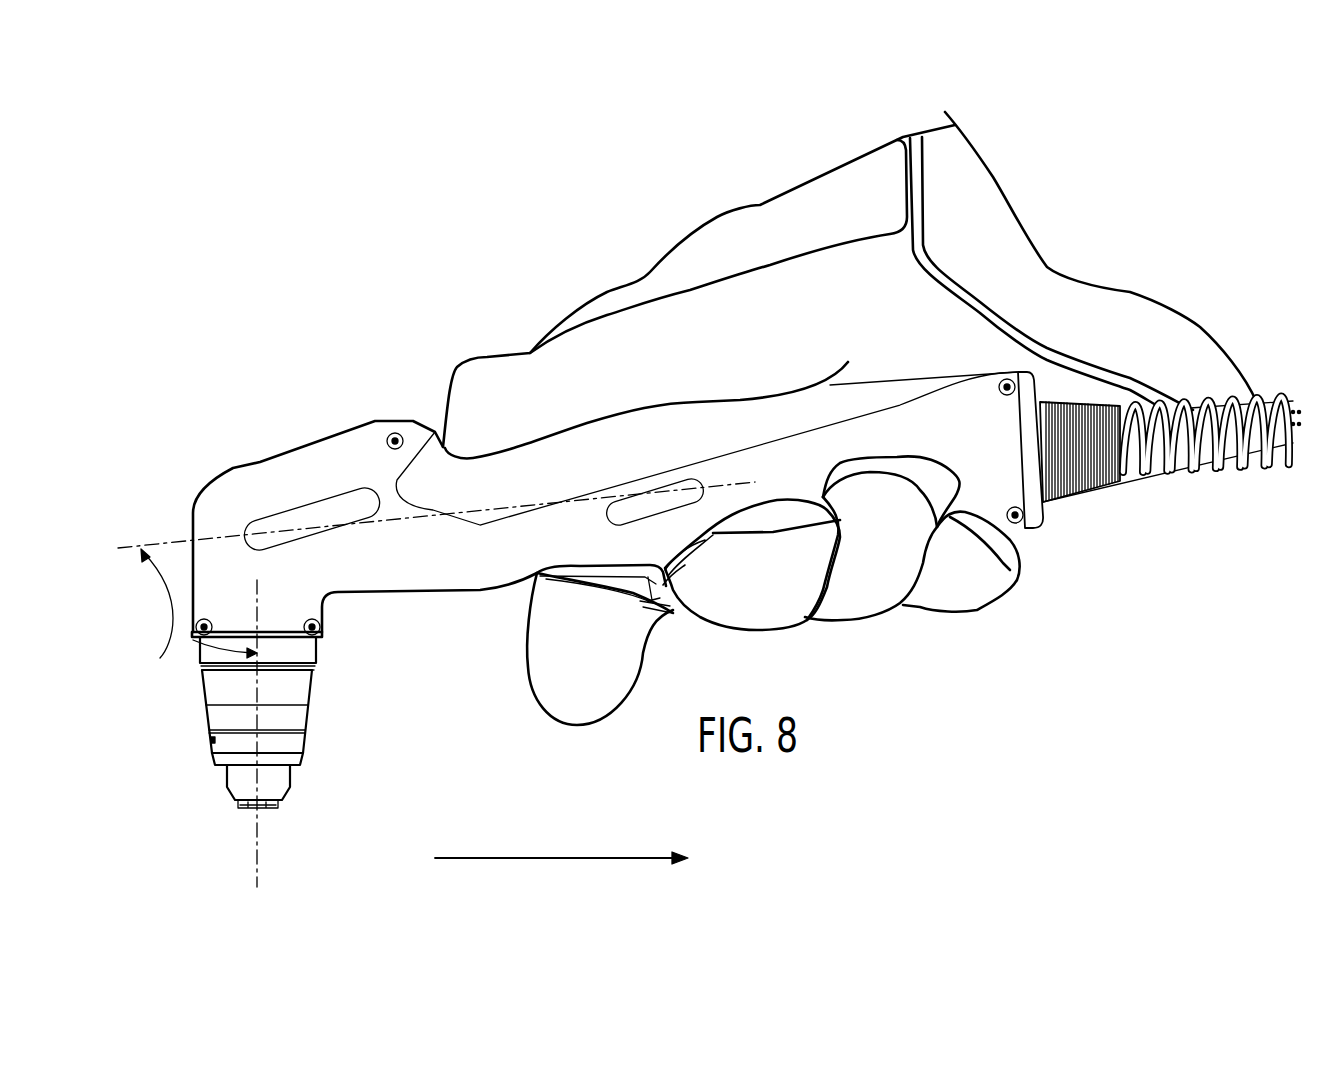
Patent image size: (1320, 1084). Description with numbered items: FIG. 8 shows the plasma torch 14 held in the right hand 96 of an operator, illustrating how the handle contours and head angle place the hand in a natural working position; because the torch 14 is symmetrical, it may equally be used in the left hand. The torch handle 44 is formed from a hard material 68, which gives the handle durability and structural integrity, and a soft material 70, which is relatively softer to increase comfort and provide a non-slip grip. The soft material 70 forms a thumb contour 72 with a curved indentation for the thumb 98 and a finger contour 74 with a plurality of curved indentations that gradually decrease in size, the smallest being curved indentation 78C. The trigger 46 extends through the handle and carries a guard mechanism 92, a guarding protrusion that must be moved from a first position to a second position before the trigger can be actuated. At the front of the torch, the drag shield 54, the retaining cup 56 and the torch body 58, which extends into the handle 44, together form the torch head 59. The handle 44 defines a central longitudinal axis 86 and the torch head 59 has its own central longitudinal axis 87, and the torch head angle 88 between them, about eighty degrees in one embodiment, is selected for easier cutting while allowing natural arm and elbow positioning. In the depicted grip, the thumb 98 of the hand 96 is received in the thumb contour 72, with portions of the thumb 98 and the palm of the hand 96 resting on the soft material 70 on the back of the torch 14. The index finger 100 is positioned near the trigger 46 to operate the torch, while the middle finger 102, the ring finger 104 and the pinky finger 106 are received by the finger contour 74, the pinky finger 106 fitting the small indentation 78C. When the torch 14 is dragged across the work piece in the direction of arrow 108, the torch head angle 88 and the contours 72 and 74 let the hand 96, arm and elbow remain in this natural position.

The torch 14 is at (341, 322).
The torch handle 44 is at (395, 420).
The trigger 46 is at (500, 590).
The drag shield 54 is at (290, 775).
The retaining cup 56 is at (213, 740).
The torch body 58 is at (318, 652).
The torch head 59 is at (310, 718).
The hard material 68 is at (262, 478).
The soft material 70 is at (420, 477).
The thumb contour 72 is at (445, 457).
The finger contour 74 is at (700, 540).
The curved indentation 78C is at (937, 527).
The central longitudinal axis 86 is at (165, 543).
The central longitudinal axis 87 is at (257, 858).
The torch head angle 88 is at (189, 616).
The guard mechanism 92 is at (672, 613).
The hand 96 is at (717, 213).
The thumb 98 is at (497, 355).
The index finger 100 is at (587, 718).
The middle finger 102 is at (753, 628).
The ring finger 104 is at (865, 622).
The pinky finger 106 is at (1003, 603).
The arrow 108 is at (557, 858).